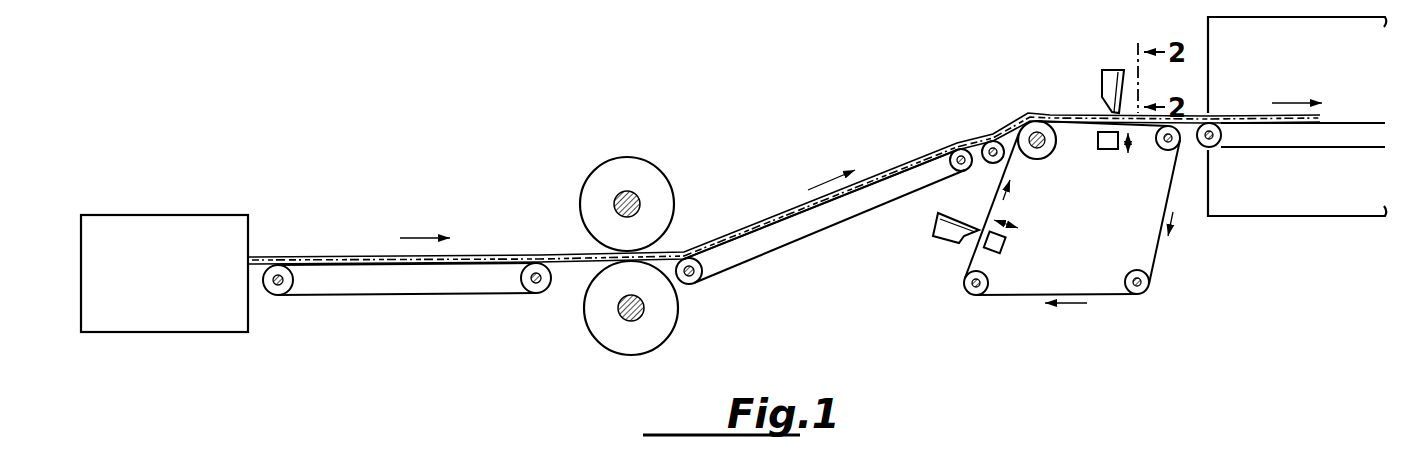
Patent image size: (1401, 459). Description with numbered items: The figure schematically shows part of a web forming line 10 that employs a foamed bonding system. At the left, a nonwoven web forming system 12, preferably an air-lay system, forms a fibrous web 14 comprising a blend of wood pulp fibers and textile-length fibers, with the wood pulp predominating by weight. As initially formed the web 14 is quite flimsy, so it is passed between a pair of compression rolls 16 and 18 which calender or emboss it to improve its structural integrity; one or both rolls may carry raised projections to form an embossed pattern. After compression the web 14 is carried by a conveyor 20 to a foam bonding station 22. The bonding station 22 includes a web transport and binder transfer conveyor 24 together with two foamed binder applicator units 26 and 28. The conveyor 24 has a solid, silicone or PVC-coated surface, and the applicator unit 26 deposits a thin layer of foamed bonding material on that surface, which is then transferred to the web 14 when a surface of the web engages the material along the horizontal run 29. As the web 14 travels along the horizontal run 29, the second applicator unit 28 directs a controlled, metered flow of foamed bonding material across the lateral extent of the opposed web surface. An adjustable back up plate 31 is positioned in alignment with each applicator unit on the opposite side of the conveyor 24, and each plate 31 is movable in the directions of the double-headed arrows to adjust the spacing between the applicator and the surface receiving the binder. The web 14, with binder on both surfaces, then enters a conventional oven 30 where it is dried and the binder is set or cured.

The web forming line 10 is at (490, 126).
The nonwoven web forming system 12 is at (206, 211).
The fibrous web 14 is at (334, 257).
The compression roll 16 is at (617, 162).
The compression roll 18 is at (607, 310).
The conveyor 20 is at (779, 256).
The foam bonding station 22 is at (1027, 243).
The web transport and binder transfer conveyor 24 is at (1012, 298).
The foamed binder applicator unit 26 is at (930, 243).
The foamed binder applicator unit 28 is at (1111, 66).
The horizontal run 29 is at (1076, 124).
The oven 30 is at (1258, 220).
The adjustable back up plate 31 is at (1103, 150).